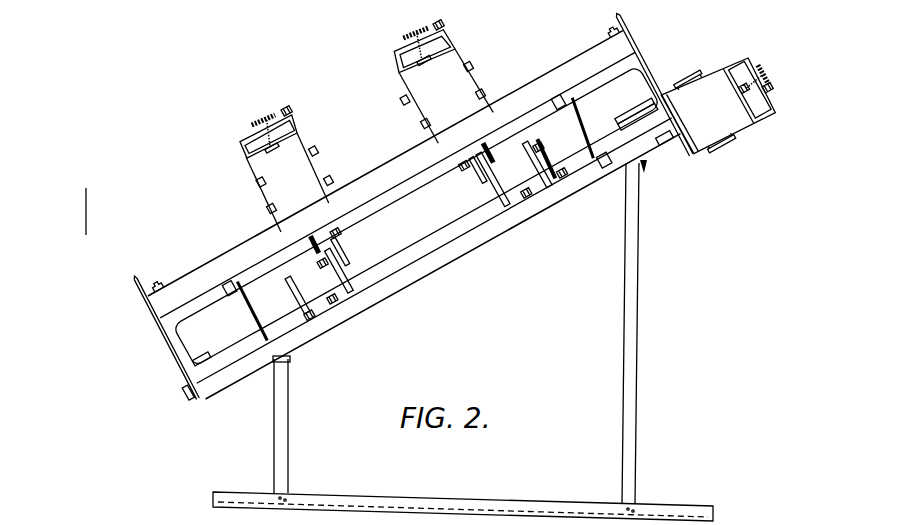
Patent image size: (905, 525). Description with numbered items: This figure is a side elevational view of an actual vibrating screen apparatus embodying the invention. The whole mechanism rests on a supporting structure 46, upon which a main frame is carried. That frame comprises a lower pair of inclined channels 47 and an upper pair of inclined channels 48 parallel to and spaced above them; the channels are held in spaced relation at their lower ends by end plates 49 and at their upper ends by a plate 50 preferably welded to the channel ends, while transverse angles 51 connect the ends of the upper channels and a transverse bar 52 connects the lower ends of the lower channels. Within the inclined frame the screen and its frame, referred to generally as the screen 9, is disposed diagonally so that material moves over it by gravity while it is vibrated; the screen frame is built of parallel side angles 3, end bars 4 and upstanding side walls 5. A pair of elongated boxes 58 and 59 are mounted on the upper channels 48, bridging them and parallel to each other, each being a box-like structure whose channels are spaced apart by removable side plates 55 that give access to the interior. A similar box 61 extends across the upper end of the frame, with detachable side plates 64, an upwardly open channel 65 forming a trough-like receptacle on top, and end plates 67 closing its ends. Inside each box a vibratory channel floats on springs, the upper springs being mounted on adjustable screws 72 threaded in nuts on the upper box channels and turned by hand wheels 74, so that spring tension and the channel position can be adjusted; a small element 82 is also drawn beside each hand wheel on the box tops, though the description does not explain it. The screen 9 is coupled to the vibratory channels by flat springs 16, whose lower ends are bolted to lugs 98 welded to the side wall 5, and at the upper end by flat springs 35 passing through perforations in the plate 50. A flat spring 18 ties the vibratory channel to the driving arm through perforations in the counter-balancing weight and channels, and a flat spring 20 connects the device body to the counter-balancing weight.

The side angle 3 is at (82, 210).
The end bar 4 is at (206, 356).
The side wall 5 is at (203, 313).
The screen and frame 9 is at (423, 211).
The flat spring 16 is at (338, 228).
The flat spring 18 is at (322, 274).
The flat spring 20 is at (245, 292).
The flat spring 35 is at (665, 136).
The supporting structure 46 is at (280, 432).
The lower inclined channel 47 is at (382, 287).
The upper inclined channel 48 is at (184, 287).
The end plate 49 is at (173, 346).
The plate 50 is at (645, 55).
The transverse angle 51 is at (146, 290).
The transverse bar 52 is at (188, 393).
The side plate 55 is at (317, 151).
The elongated box 58 is at (300, 145).
The elongated box 59 is at (422, 88).
The box 61 is at (710, 83).
The side plate 64 is at (688, 79).
The upwardly open channel 65 is at (730, 62).
The end plate 67 is at (692, 145).
The adjustable screw 72 is at (751, 89).
The hand wheel 74 is at (260, 122).
The lock nut 82 is at (285, 110).
The lug 98 is at (344, 262).